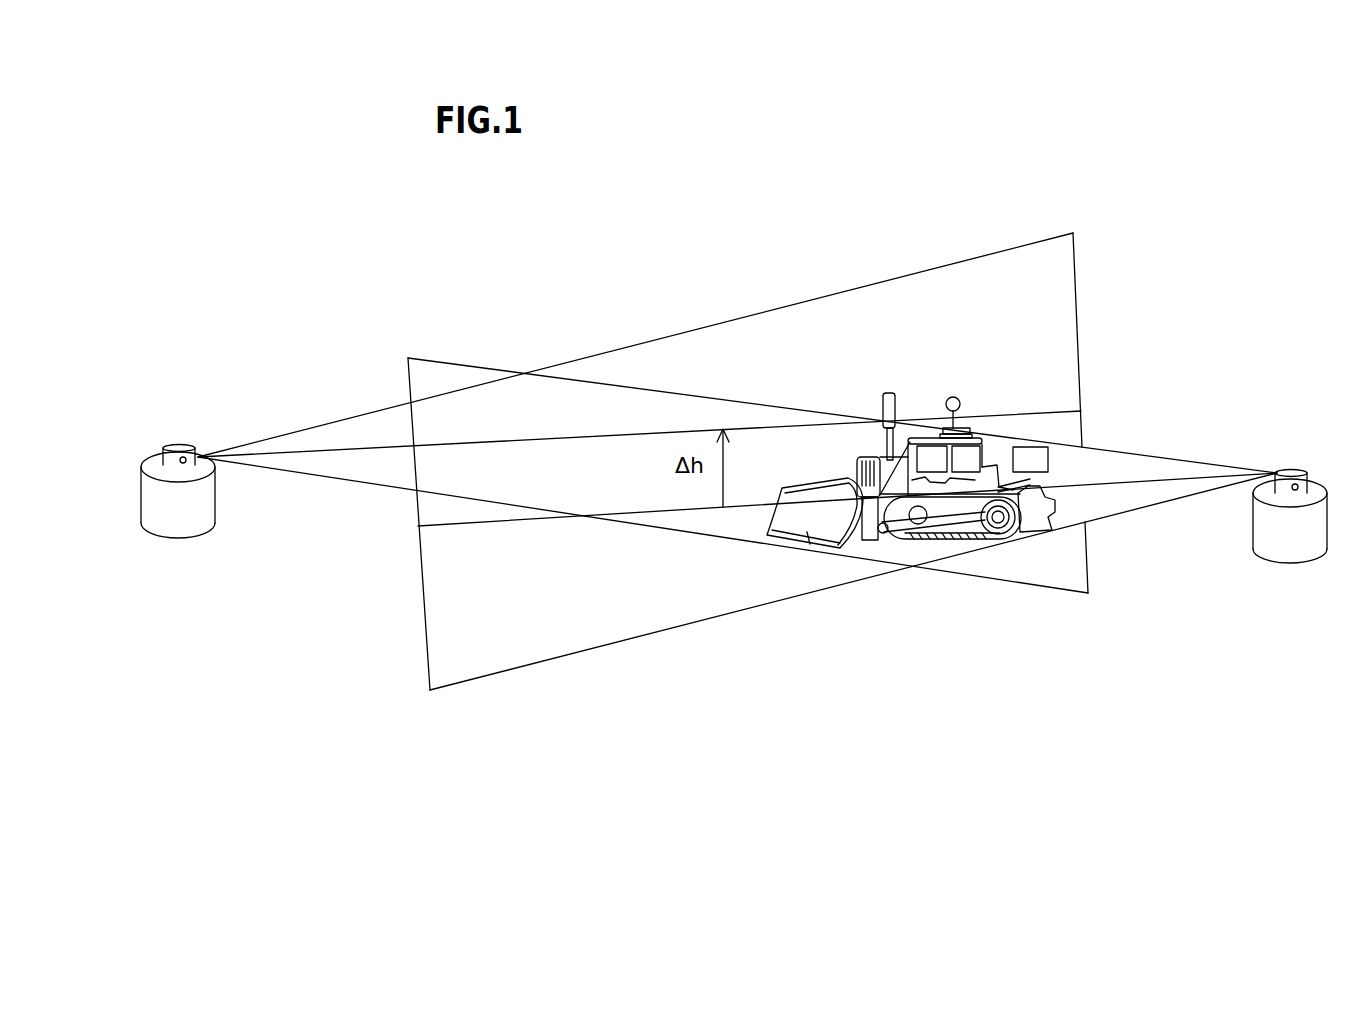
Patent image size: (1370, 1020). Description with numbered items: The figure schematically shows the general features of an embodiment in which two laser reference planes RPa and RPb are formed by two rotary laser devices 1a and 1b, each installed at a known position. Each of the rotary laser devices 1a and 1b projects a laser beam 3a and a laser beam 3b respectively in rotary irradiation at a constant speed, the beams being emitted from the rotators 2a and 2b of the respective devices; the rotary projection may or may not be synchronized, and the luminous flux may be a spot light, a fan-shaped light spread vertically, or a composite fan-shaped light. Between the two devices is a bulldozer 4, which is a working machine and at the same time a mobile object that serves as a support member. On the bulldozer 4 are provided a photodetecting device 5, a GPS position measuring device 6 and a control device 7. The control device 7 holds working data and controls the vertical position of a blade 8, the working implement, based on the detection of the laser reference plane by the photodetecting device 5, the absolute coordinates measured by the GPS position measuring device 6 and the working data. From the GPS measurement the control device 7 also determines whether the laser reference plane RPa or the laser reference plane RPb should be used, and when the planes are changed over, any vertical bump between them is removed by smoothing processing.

The rotary laser device 1a is at (218, 500).
The rotary laser device 1b is at (1328, 500).
The rotator 2a is at (183, 443).
The rotator 2b is at (1300, 470).
The laser beam 3a is at (657, 338).
The laser beam 3b is at (570, 655).
The bulldozer 4 is at (990, 440).
The photodetecting device 5 is at (890, 393).
The GPS position measuring device 6 is at (948, 398).
The control device 7 is at (1048, 462).
The blade 8 is at (828, 477).
The laser reference plane RPa is at (1047, 412).
The laser reference plane RPb is at (463, 525).